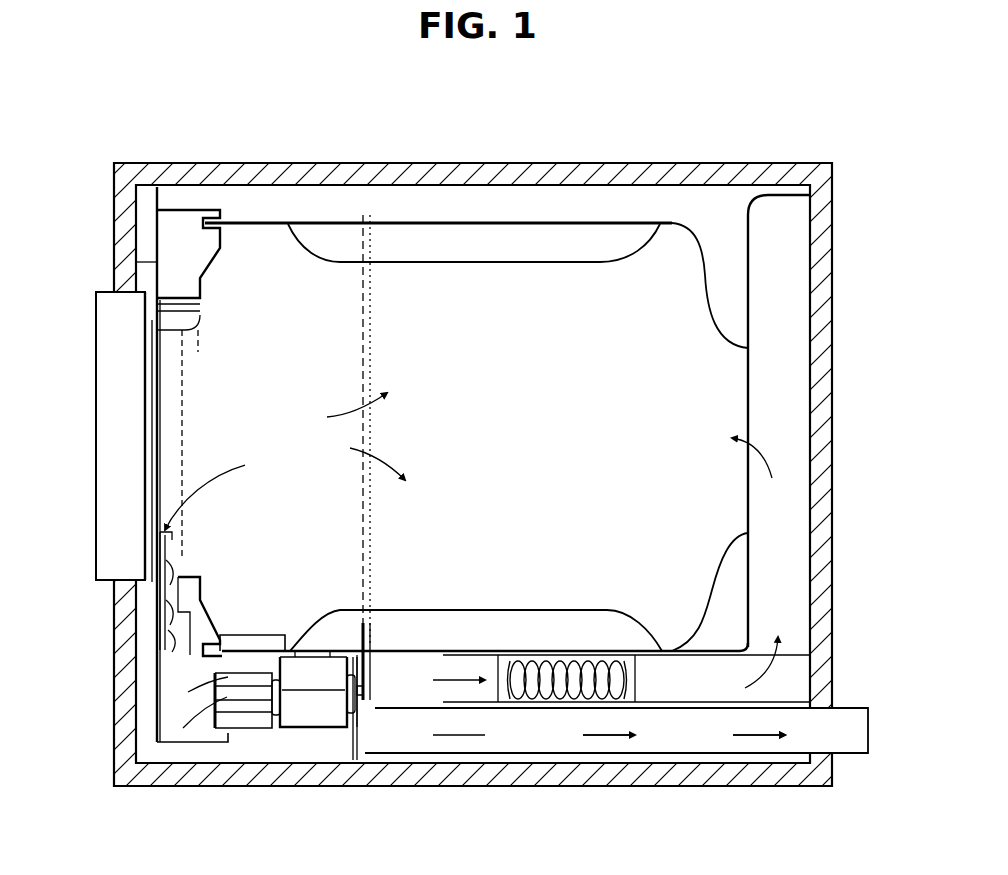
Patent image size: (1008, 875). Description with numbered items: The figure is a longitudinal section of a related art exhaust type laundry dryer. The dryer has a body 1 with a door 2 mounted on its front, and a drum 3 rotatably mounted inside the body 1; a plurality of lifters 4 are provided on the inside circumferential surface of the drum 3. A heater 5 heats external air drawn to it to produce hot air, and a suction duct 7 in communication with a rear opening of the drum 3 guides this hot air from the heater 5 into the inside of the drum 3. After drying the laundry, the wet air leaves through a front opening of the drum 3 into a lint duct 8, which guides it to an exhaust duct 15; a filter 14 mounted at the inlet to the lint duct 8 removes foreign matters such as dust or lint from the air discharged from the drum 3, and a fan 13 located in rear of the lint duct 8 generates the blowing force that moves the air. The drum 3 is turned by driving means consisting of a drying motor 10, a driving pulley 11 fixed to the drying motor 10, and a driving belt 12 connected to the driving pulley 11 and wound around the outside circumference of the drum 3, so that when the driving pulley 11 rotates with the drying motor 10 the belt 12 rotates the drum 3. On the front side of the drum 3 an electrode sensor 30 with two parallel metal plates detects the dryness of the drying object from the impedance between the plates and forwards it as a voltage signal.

The body 1 is at (722, 152).
The door 2 is at (120, 445).
The drum 3 is at (460, 221).
The lifters 4 is at (600, 238).
The heater 5 is at (545, 704).
The suction duct 7 is at (795, 418).
The lint duct 8 is at (170, 708).
The drying motor 10 is at (300, 712).
The driving pulley 11 is at (378, 705).
The driving belt 12 is at (368, 543).
The fan 13 is at (245, 712).
The filter 14 is at (190, 656).
The exhaust duct 15 is at (680, 735).
The electrode sensor 30 is at (255, 635).